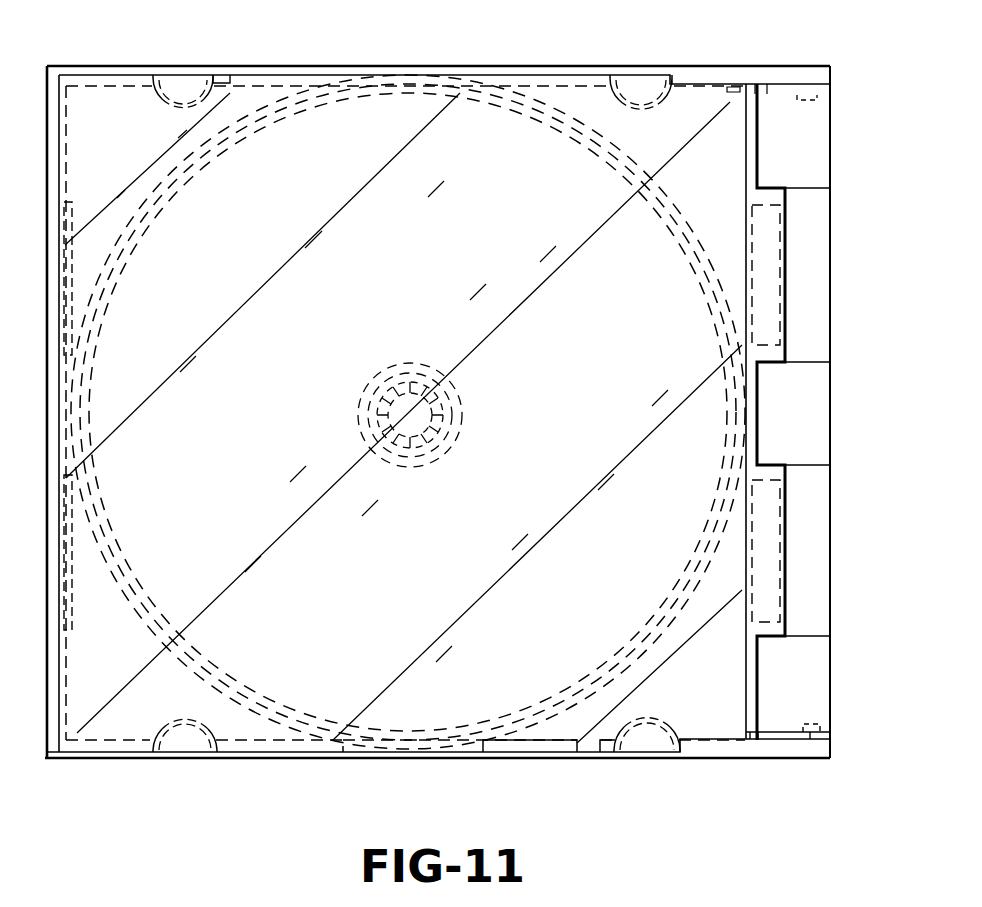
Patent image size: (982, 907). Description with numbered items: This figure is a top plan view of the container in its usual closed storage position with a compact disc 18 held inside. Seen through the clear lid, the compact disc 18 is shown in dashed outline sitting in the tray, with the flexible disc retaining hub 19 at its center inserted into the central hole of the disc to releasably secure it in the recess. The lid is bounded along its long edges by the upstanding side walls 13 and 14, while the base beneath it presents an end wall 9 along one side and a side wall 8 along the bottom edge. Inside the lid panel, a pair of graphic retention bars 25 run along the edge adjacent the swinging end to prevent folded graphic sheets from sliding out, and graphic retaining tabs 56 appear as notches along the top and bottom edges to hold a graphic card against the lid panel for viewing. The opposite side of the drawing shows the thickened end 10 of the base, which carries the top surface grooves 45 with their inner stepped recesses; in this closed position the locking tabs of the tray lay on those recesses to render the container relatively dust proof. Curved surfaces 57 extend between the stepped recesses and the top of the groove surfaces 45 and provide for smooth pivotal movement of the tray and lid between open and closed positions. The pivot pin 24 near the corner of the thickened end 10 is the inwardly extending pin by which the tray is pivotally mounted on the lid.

The side wall 13 is at (258, 67).
The graphic retaining tab 56 is at (636, 76).
The curved surface 57 is at (810, 242).
The top surface groove 45 is at (806, 358).
The thickened end 10 is at (793, 679).
The pivot pin 24 is at (810, 712).
The end wall 9 is at (50, 418).
The flexible disc retaining hub 19 is at (445, 405).
The graphic retention bar 25 is at (72, 585).
The side wall 14 is at (120, 760).
The compact disc 18 is at (303, 675).
The side wall 8 is at (530, 745).